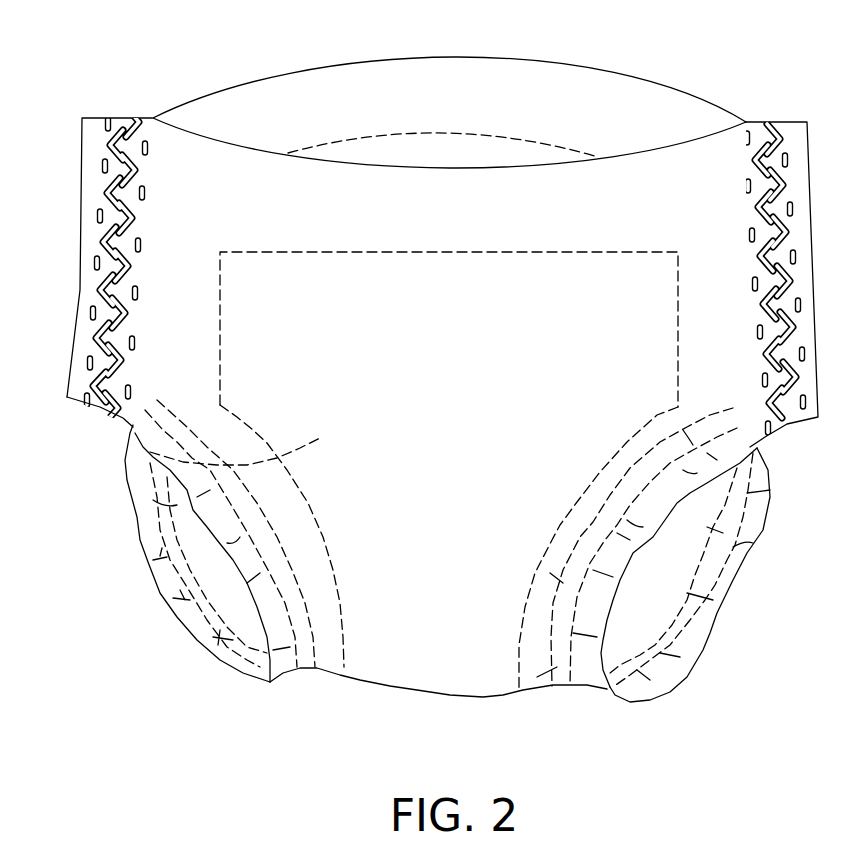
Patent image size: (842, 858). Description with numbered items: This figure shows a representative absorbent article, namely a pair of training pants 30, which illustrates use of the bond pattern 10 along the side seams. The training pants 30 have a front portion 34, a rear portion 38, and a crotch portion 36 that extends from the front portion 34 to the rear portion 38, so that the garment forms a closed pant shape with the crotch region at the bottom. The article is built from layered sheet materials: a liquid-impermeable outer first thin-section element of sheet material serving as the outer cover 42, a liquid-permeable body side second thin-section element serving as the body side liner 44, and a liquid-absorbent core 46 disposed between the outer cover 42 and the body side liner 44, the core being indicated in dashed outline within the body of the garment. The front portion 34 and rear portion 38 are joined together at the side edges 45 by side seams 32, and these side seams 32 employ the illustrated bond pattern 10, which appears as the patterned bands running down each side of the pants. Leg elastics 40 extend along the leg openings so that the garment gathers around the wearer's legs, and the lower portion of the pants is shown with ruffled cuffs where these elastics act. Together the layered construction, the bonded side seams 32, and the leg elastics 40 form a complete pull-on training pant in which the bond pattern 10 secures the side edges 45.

The bond pattern 10 is at (793, 140).
The training pants 30 is at (52, 240).
The side seams 32 is at (82, 172).
The front portion 34 is at (237, 173).
The crotch portion 36 is at (483, 670).
The rear portion 38 is at (450, 93).
The leg elastics 40 is at (733, 593).
The outer cover 42 is at (663, 167).
The body side liner 44 is at (203, 572).
The side edges 45 is at (72, 360).
The liquid-absorbent core 46 is at (135, 440).